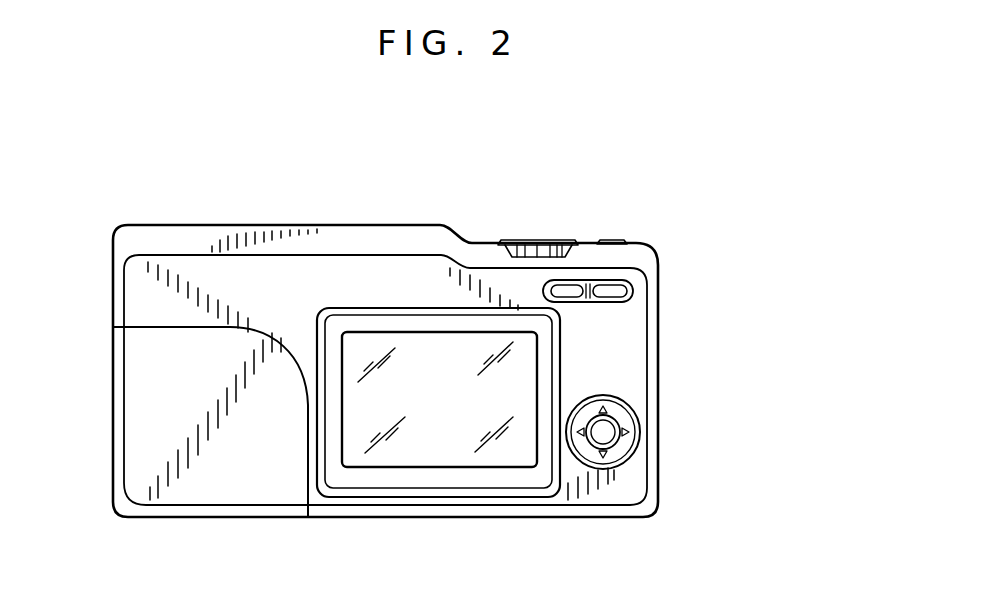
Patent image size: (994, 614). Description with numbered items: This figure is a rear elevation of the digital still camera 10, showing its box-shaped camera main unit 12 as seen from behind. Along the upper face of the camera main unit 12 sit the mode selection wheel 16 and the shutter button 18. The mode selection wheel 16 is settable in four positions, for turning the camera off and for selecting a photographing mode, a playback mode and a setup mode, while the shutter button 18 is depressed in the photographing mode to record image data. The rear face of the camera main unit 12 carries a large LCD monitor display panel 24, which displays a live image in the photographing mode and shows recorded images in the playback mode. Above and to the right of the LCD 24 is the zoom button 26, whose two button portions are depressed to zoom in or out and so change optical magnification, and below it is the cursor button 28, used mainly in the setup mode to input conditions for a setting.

The digital still camera 10 is at (370, 190).
The camera main unit 12 is at (718, 314).
The mode selection wheel 16 is at (540, 241).
The shutter button 18 is at (612, 239).
The LCD monitor display panel 24 is at (368, 346).
The zoom button 26 is at (621, 281).
The cursor button 28 is at (624, 414).